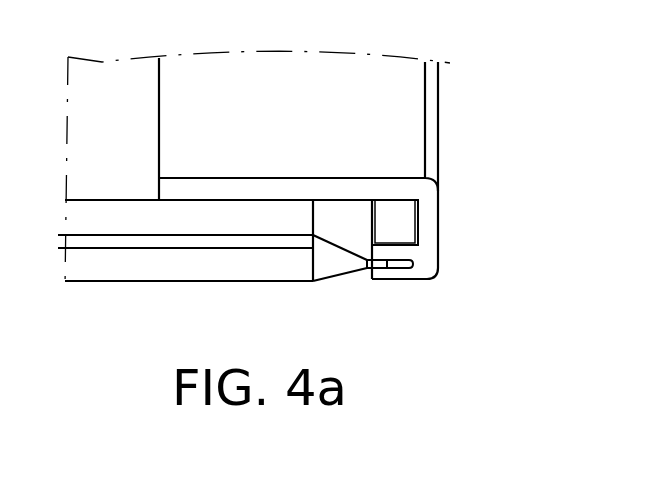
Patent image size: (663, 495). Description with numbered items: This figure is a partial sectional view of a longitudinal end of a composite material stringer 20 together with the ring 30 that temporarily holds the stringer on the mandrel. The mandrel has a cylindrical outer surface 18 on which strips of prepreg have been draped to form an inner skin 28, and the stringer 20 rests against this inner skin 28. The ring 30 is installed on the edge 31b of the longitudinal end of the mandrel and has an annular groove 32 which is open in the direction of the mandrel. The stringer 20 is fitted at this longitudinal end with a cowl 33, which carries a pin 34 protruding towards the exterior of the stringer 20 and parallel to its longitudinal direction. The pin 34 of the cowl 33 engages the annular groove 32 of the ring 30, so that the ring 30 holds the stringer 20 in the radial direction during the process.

The ring 30 is at (440, 106).
The outer surface 18 is at (100, 218).
The inner skin 28 is at (177, 248).
The composite material stringer 20 is at (230, 270).
The edge of longitudinal end of the mandrel 31b is at (290, 223).
The cowl 33 is at (330, 280).
The pin 34 is at (382, 268).
The annular groove 32 is at (402, 268).